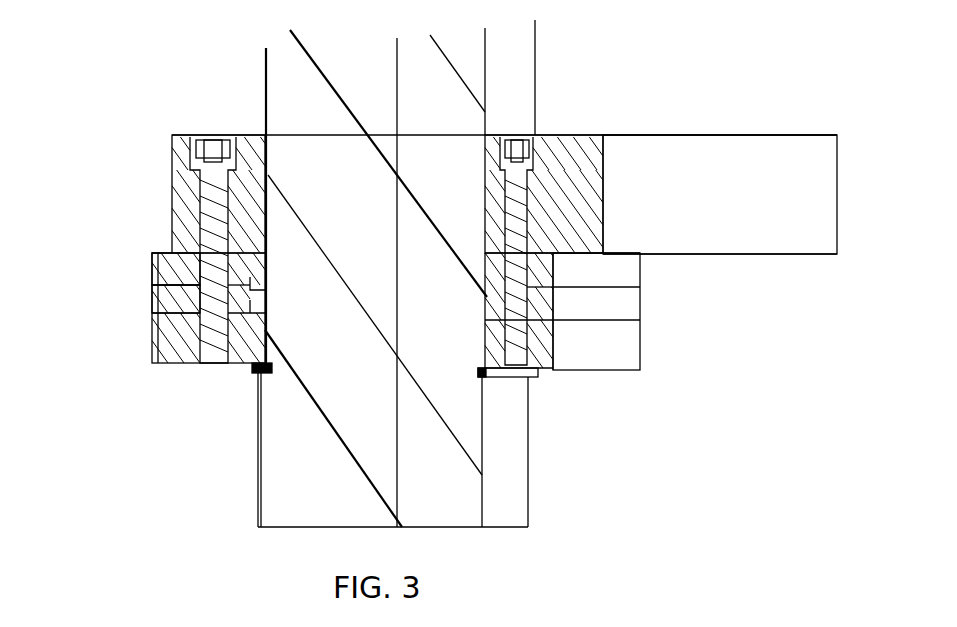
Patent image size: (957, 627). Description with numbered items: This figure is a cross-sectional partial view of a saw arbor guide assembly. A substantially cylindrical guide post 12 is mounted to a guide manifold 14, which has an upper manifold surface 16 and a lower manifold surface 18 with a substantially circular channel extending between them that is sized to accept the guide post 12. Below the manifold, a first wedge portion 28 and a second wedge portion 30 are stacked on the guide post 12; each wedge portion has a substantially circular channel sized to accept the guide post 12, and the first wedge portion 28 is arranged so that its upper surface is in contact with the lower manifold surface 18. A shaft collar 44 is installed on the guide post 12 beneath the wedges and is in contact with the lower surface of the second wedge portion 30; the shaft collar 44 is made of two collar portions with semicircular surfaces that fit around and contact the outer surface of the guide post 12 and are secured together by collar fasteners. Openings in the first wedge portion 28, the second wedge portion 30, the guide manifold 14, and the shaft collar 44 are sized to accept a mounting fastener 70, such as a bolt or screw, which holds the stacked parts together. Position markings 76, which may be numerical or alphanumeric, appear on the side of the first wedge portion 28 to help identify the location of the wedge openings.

The guide post 12 is at (372, 44).
The guide manifold 14 is at (810, 197).
The upper manifold surface 16 is at (726, 135).
The lower manifold surface 18 is at (752, 255).
The first wedge portion 28 is at (165, 265).
The second wedge portion 30 is at (165, 296).
The shaft collar 44 is at (625, 347).
The mounting fastener 70 is at (213, 165).
The position markings 76 is at (593, 272).